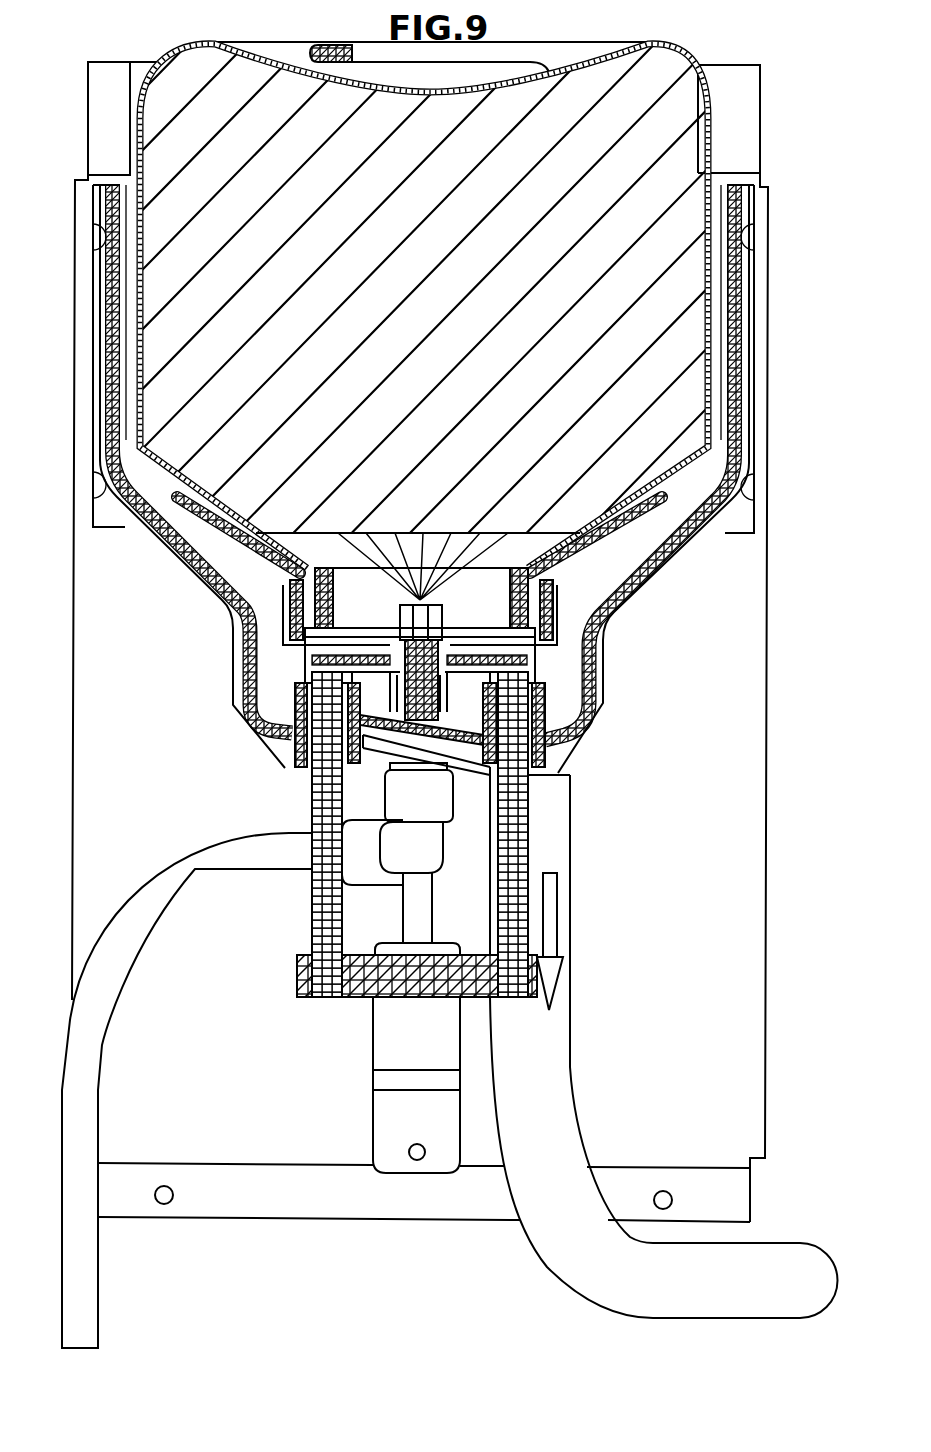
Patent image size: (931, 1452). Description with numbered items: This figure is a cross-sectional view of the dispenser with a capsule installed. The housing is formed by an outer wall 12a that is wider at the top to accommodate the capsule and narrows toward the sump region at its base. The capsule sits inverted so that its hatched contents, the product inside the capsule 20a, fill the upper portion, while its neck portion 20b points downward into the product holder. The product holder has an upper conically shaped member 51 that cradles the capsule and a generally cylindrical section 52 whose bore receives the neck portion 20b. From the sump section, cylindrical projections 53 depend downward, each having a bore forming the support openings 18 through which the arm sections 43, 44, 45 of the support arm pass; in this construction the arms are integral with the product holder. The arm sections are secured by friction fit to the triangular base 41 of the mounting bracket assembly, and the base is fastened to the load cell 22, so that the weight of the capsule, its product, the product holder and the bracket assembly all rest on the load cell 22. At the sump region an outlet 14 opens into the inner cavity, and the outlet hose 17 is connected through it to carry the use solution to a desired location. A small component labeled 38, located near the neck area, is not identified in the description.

The outer wall 12a is at (687, 540).
The outlet 14 is at (538, 777).
The outlet hose 17 is at (567, 1080).
The support openings 18 is at (308, 765).
The product inside the capsule 20a is at (465, 368).
The neck portion 20b is at (525, 610).
The load cell 22 is at (373, 1053).
The nut 38 is at (400, 612).
The triangular base 41 is at (347, 985).
The arm section 43 is at (423, 905).
The arm section 44 is at (513, 858).
The arm section 45 is at (320, 910).
The conically shaped member 51 is at (207, 510).
The cylindrical section 52 is at (298, 602).
The cylindrical projections 53 is at (547, 747).